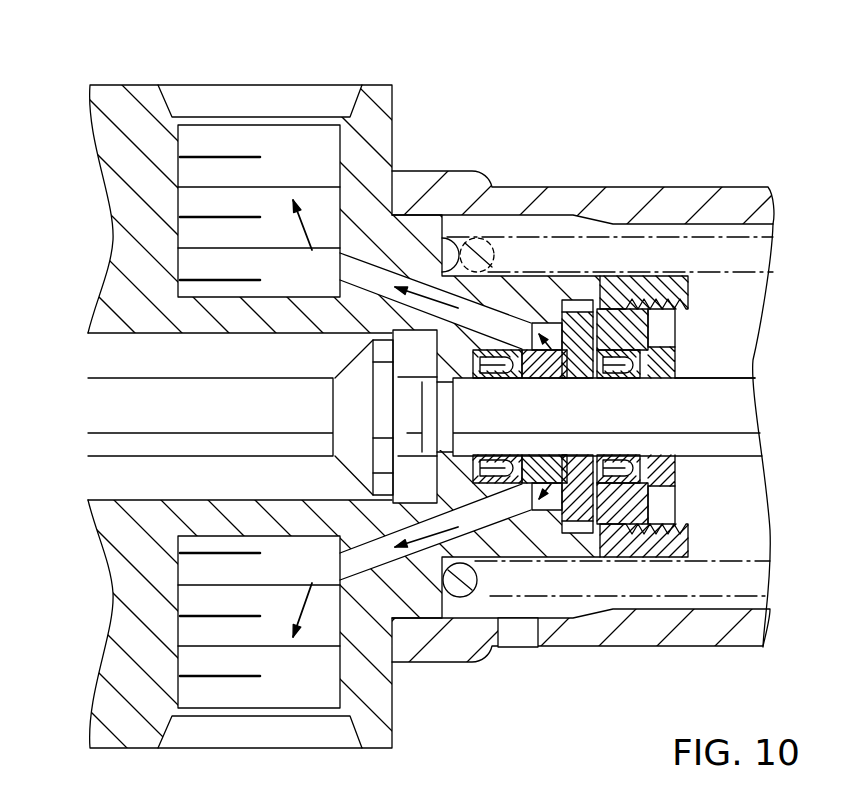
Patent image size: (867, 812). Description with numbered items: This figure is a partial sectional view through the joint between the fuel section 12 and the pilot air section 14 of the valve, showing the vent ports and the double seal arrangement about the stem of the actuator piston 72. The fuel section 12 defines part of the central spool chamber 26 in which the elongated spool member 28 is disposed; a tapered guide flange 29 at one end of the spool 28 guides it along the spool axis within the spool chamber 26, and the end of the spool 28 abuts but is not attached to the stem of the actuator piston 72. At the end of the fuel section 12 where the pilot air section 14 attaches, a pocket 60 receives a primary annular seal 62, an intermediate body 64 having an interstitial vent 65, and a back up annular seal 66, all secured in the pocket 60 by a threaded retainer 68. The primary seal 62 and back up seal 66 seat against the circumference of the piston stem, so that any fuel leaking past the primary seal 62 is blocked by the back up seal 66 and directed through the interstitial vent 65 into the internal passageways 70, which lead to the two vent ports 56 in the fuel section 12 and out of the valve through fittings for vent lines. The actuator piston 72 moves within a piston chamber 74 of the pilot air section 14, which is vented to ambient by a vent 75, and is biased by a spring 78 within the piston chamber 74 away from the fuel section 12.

The fuel section 12 is at (122, 250).
The pilot air section 14 is at (694, 182).
The central spool chamber 26 is at (112, 335).
The spool member 28 is at (112, 403).
The tapered guide flange 29 is at (373, 386).
The vent ports 56 is at (168, 103).
The pocket 60 is at (611, 298).
The primary annular seal 62 is at (477, 381).
The intermediate body 64 is at (556, 375).
The interstitial vent 65 is at (502, 368).
The back up annular seal 66 is at (613, 381).
The threaded retainer 68 is at (655, 362).
The internal passageways 70 is at (382, 268).
The actuator piston 72 is at (758, 402).
The piston chamber 74 is at (728, 344).
The vent 75 is at (516, 632).
The spring 78 is at (482, 246).